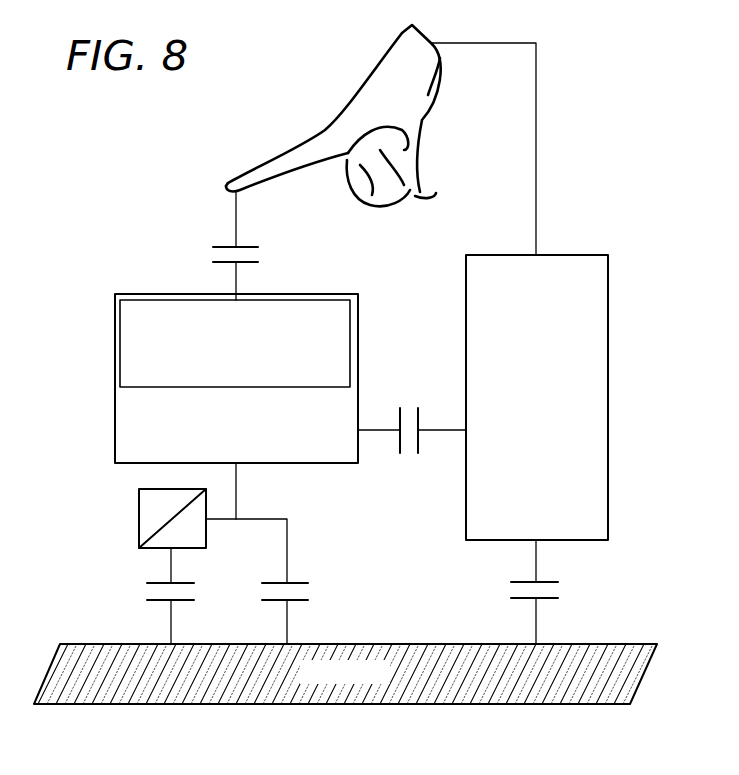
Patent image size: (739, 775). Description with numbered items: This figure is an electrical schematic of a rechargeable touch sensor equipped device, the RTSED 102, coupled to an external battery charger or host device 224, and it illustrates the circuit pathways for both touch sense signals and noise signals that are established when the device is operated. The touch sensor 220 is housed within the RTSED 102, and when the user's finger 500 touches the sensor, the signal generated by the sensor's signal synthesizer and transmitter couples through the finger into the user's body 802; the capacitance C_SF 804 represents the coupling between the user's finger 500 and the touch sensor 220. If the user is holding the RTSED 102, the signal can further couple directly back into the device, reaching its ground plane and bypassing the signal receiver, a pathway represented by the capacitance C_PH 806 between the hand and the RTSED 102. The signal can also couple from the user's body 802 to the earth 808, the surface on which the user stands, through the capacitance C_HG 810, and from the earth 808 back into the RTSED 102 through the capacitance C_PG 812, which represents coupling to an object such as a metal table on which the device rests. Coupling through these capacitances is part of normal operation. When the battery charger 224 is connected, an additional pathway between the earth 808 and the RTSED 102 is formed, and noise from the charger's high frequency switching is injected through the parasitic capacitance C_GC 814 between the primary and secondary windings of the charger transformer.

The user's finger 500 is at (257, 170).
The capacitance C_SF 804 is at (218, 246).
The touch sensor 220 is at (115, 320).
The RTSED 102 is at (132, 423).
The battery charger 224 is at (139, 535).
The capacitance C_GC 814 is at (185, 582).
The capacitance C_PG 812 is at (287, 582).
The capacitance C_PH 806 is at (400, 452).
The user's body 802 is at (603, 249).
The capacitance C_HG 810 is at (540, 581).
The earth 808 is at (657, 644).